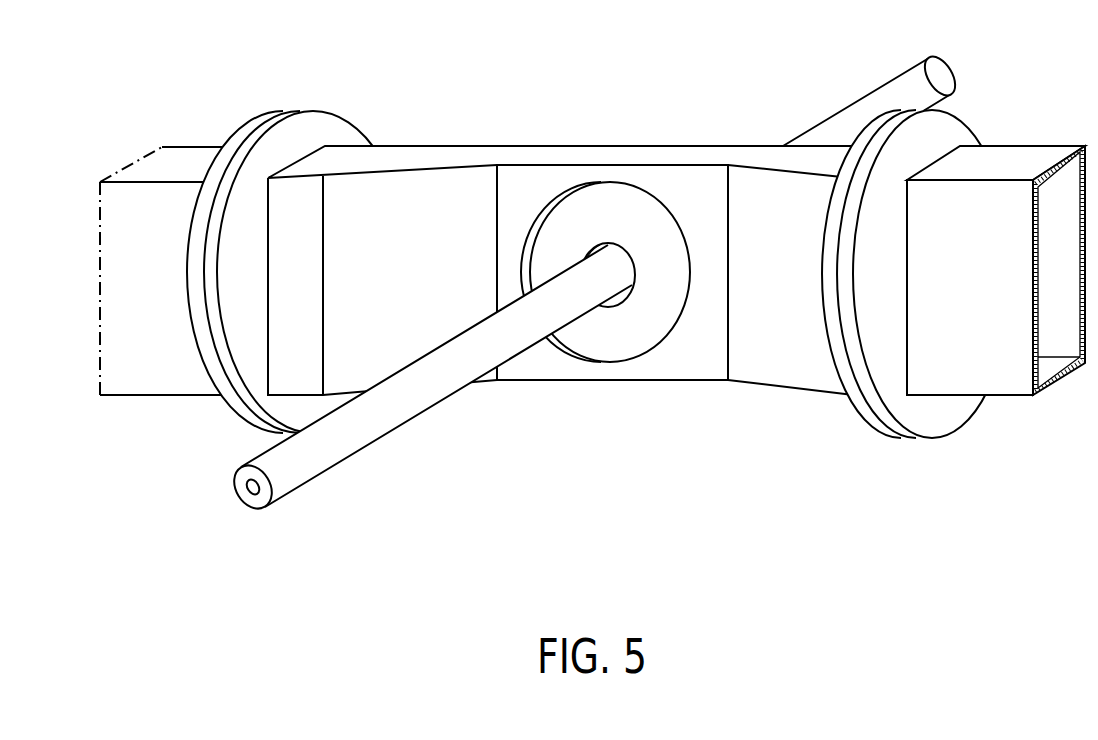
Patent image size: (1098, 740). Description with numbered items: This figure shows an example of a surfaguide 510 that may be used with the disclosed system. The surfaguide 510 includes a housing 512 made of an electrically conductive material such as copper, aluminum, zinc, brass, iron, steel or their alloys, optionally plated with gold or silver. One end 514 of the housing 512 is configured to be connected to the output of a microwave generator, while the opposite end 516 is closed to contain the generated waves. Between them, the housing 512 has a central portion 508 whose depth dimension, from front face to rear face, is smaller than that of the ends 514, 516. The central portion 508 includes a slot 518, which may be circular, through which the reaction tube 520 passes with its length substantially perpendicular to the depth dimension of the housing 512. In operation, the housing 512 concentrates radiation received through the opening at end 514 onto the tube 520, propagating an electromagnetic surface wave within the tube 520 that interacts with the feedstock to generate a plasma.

The central portion 508 is at (660, 144).
The surfaguide 510 is at (592, 301).
The housing 512 is at (417, 144).
The end 514 is at (167, 143).
The opposite end 516 is at (1023, 144).
The slot 518 is at (617, 308).
The reaction tube 520 is at (297, 490).